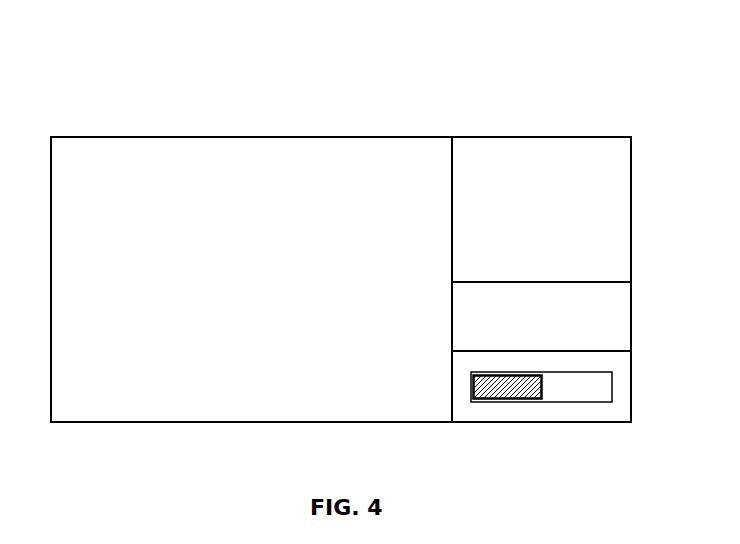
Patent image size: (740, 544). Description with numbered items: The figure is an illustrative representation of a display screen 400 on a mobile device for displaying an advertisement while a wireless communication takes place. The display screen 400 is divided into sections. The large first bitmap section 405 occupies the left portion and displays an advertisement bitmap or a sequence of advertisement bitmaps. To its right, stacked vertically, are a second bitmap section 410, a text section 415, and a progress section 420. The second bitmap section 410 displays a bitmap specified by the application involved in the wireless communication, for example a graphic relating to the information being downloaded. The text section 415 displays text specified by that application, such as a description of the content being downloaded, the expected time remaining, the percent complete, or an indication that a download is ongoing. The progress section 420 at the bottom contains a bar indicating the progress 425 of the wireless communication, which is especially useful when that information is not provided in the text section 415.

The display screen 400 is at (82, 50).
The first bitmap section 405 is at (113, 145).
The second bitmap section 410 is at (621, 196).
The text section 415 is at (621, 322).
The progress section 420 is at (621, 388).
The progress 425 is at (553, 402).